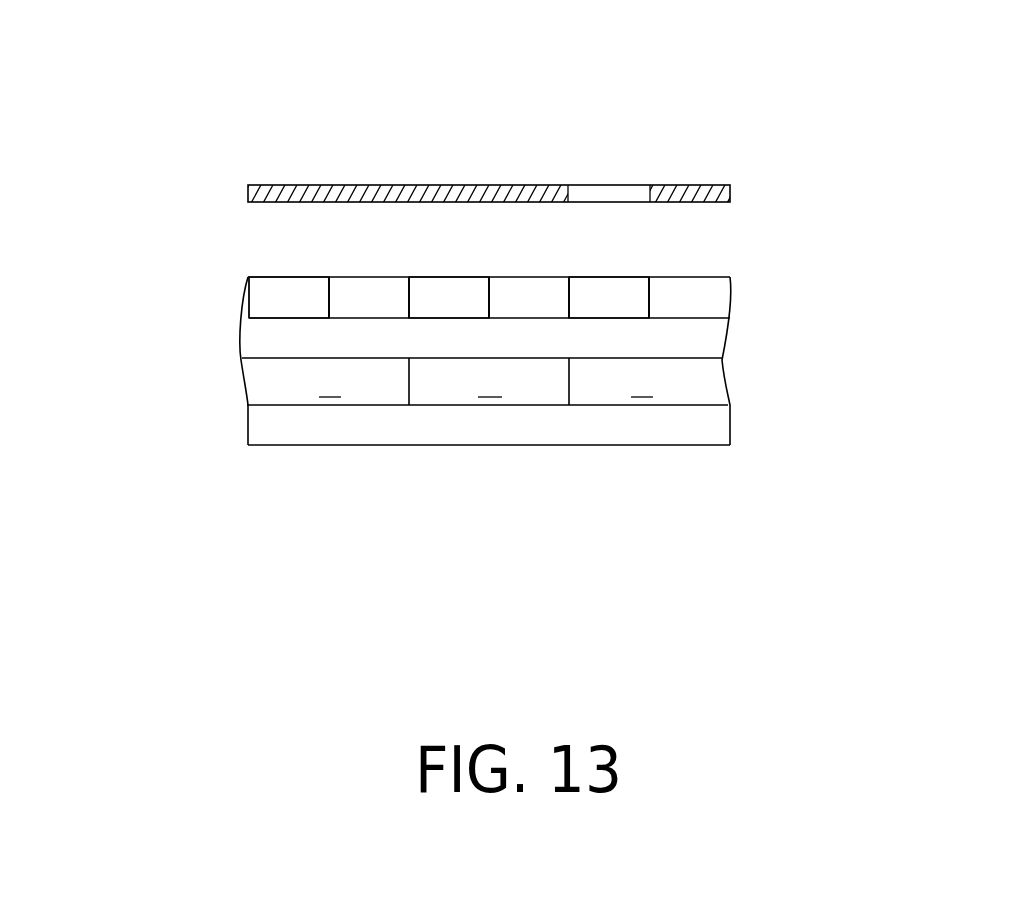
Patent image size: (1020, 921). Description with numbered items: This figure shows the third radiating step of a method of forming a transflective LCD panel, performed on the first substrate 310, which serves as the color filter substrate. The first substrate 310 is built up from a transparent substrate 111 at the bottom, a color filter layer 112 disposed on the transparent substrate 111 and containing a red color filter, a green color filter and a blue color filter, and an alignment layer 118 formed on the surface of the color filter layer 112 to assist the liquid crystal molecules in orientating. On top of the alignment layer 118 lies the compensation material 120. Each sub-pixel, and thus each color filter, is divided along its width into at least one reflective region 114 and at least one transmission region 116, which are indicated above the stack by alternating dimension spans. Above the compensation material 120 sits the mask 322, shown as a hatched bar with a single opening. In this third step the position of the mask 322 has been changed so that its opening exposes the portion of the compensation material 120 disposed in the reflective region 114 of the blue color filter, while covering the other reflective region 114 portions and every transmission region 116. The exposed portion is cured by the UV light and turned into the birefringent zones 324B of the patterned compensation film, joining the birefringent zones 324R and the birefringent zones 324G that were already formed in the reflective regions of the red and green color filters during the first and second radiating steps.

The reflective region 114 is at (639, 62).
The transmission region 116 is at (729, 87).
The first substrate 310 is at (762, 237).
The mask 322 is at (245, 193).
The birefringent zones 324R is at (290, 293).
The birefringent zones 324G is at (451, 293).
The birefringent zones 324B is at (611, 293).
The compensation material 120 is at (744, 296).
The alignment layer 118 is at (713, 342).
The color filter layer 112 is at (736, 375).
The transparent substrate 111 is at (713, 430).